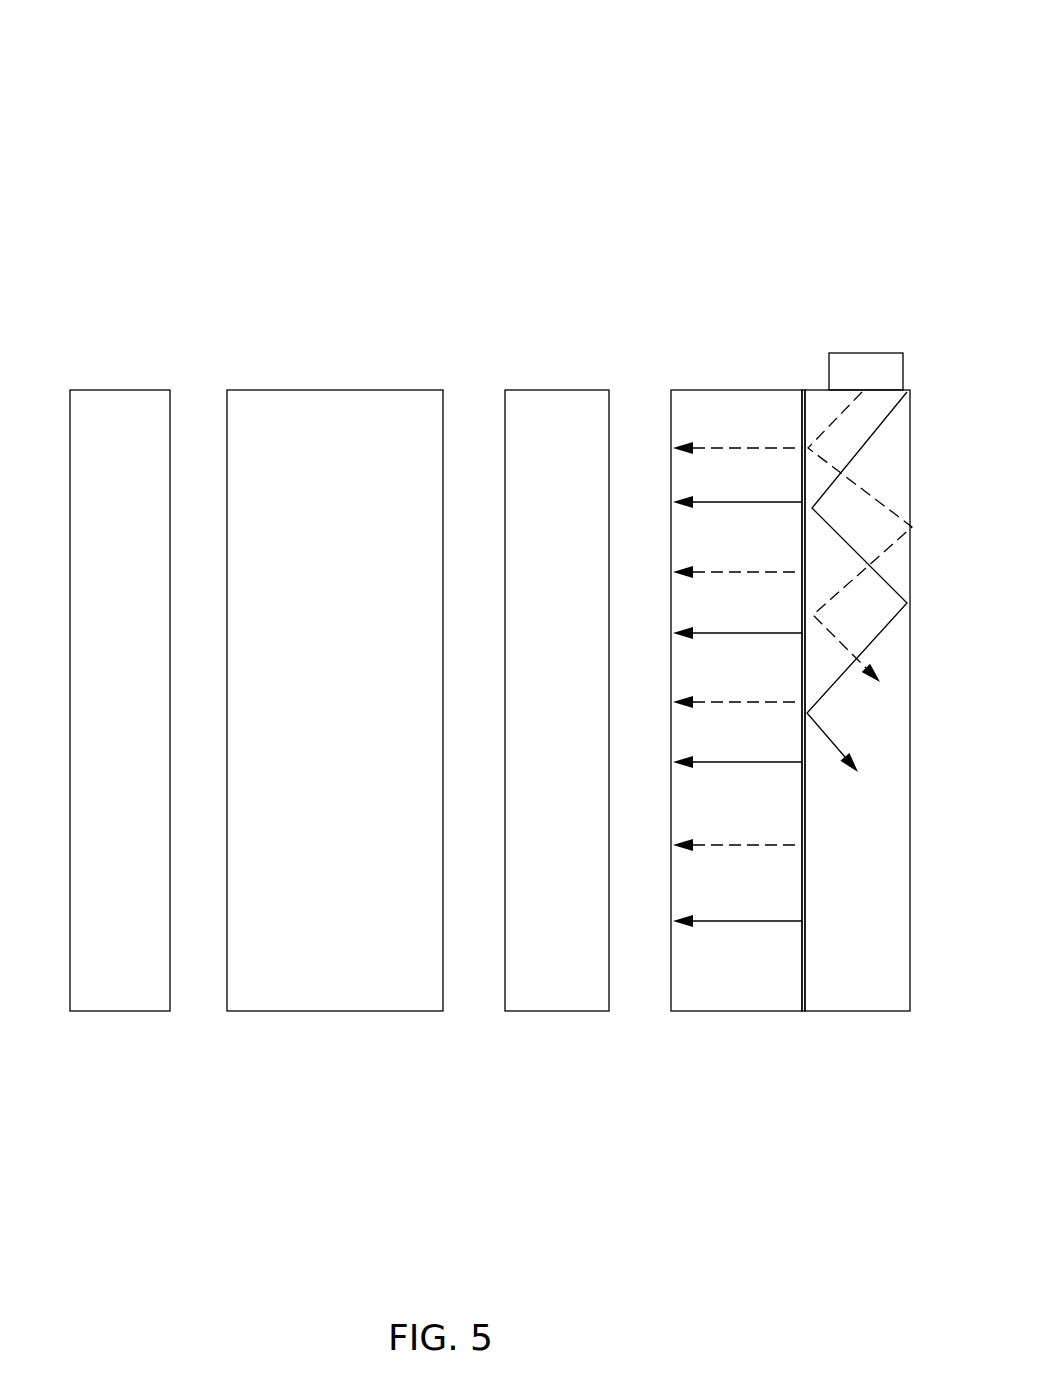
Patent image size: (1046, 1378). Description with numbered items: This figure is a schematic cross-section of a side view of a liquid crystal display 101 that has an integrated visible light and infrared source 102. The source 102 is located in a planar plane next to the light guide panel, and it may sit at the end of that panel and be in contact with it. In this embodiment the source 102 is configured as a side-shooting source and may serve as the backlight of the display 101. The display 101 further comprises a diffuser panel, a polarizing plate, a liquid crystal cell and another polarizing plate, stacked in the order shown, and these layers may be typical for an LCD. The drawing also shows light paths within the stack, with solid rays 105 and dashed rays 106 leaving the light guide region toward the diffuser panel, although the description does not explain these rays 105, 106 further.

The liquid crystal display 101 is at (378, 165).
The integrated VL and IR source 102 is at (857, 352).
The emitted light 105 is at (710, 505).
The reflected light 106 is at (760, 448).